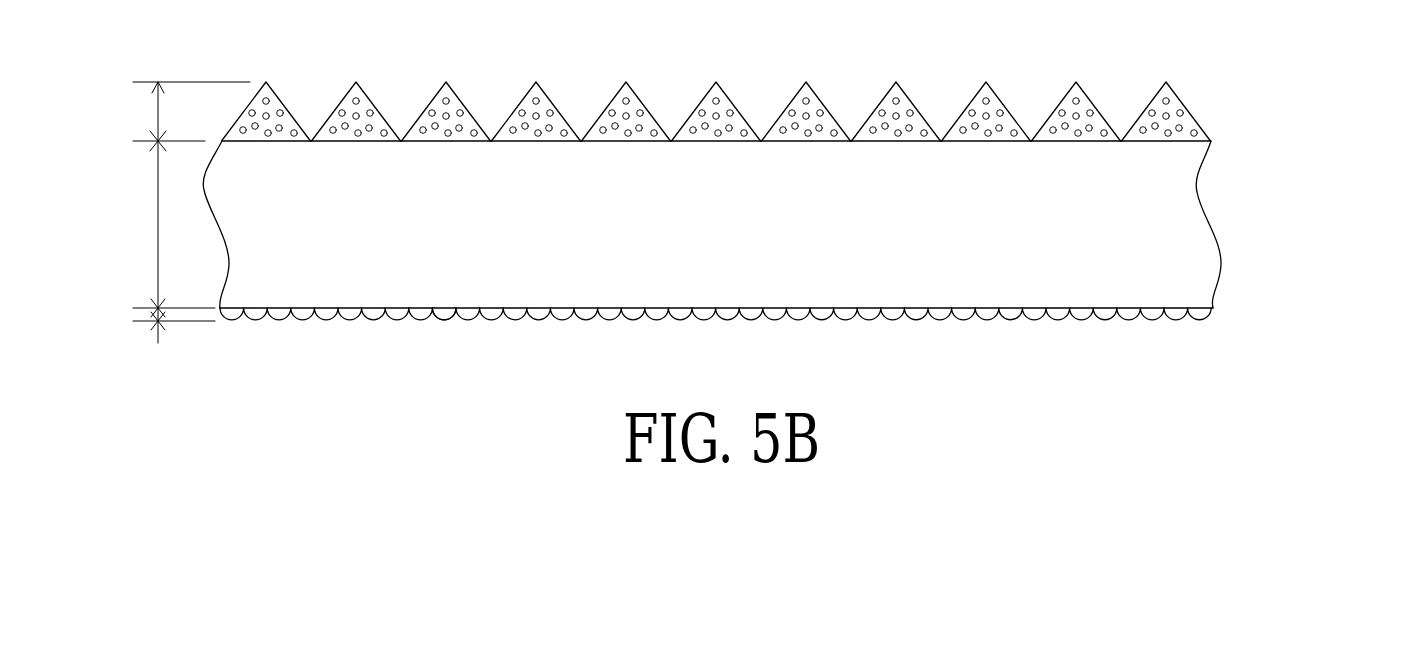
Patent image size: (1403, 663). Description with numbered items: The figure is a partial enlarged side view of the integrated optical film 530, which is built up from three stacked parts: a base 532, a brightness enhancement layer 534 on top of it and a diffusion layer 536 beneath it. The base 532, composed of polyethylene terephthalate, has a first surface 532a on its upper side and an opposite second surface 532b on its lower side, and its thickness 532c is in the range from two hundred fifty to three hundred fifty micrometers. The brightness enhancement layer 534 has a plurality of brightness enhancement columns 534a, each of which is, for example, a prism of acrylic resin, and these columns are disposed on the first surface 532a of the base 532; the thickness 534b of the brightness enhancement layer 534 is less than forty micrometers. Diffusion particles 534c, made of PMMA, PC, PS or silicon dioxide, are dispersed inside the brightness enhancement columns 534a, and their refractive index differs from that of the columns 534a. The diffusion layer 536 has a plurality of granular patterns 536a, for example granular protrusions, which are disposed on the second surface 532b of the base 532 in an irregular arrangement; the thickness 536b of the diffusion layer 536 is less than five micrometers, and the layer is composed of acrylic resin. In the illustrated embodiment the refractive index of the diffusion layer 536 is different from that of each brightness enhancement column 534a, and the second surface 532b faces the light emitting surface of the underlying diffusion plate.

The integrated optical film 530 is at (1175, 398).
The base 532 is at (1180, 197).
The first surface 532a is at (1123, 132).
The second surface 532b is at (1187, 321).
The thickness of the base 532c is at (158, 222).
The brightness enhancement layer 534 is at (1246, 116).
The brightness enhancement columns 534a is at (272, 91).
The thickness of the brightness enhancement layer 534b is at (158, 109).
The diffusion particles 534c is at (357, 100).
The diffusion layer 536 is at (1231, 317).
The granular patterns 536a is at (443, 315).
The thickness of the diffusion layer 536b is at (158, 316).